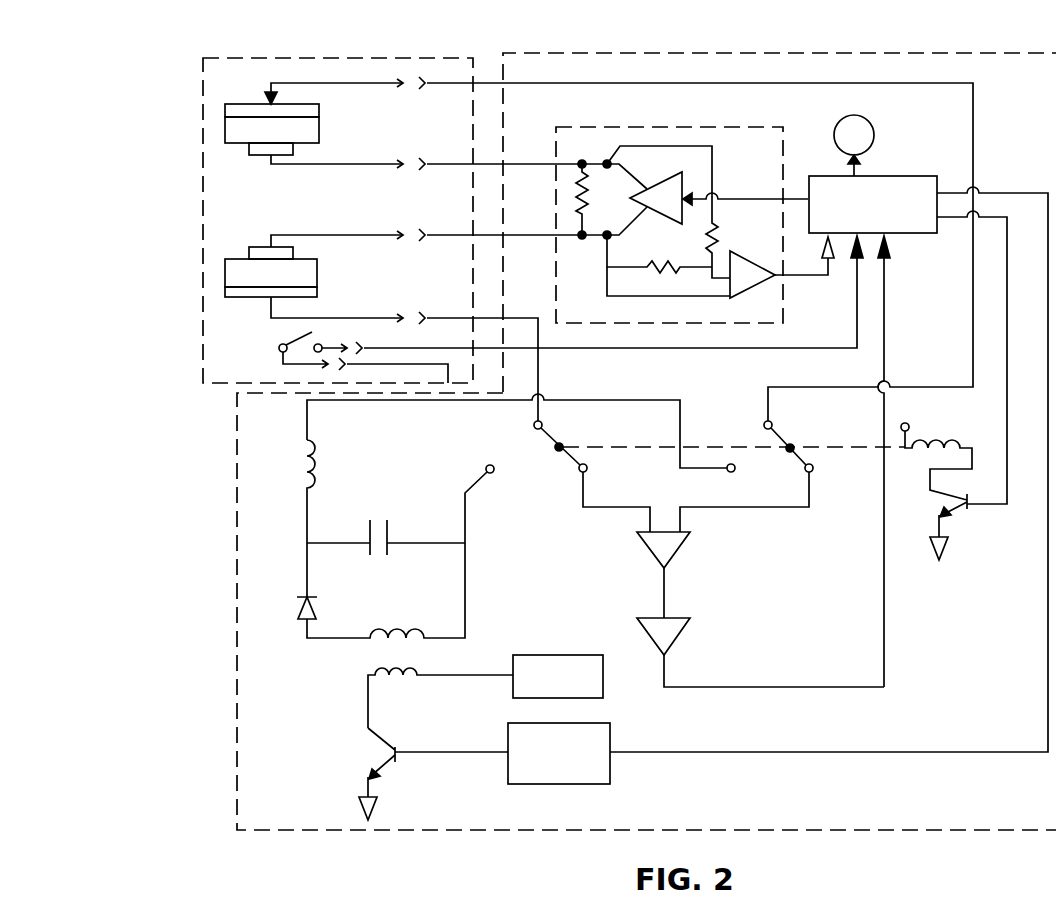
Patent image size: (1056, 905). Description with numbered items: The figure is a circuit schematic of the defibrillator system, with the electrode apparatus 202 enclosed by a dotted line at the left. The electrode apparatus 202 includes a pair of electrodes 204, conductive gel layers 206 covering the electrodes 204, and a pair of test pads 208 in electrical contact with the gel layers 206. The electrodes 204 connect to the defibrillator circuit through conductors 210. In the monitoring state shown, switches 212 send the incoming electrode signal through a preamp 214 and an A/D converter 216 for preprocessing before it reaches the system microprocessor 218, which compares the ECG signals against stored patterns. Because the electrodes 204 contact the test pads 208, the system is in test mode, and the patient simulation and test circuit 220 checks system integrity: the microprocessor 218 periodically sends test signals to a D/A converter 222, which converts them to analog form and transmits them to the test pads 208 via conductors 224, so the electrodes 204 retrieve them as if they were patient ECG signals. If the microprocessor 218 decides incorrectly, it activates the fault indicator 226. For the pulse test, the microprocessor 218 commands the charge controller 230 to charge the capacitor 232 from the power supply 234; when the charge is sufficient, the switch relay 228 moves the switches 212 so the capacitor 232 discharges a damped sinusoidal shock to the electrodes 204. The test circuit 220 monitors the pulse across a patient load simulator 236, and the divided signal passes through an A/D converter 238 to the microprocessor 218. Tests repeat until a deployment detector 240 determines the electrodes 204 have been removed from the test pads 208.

The electrode apparatus 202 is at (200, 366).
The electrodes 204 is at (238, 107).
The conductive gel layers 206 is at (237, 128).
The test pads 208 is at (245, 147).
The conductors 210 is at (815, 83).
The switches 212 is at (504, 454).
The preamp 214 is at (672, 548).
The A/D converter 216 is at (667, 638).
The microprocessor 218 is at (813, 178).
The patient simulation and test circuit 220 is at (783, 308).
The D/A converter 222 is at (657, 192).
The conductors 224 is at (515, 237).
The fault indicator 226 is at (862, 138).
The switch relay 228 is at (969, 506).
The charge controller 230 is at (563, 784).
The capacitor 232 is at (400, 508).
The power supply 234 is at (545, 655).
The patient load simulator 236 is at (585, 200).
The A/D converter 238 is at (746, 267).
The deployment detector 240 is at (266, 351).